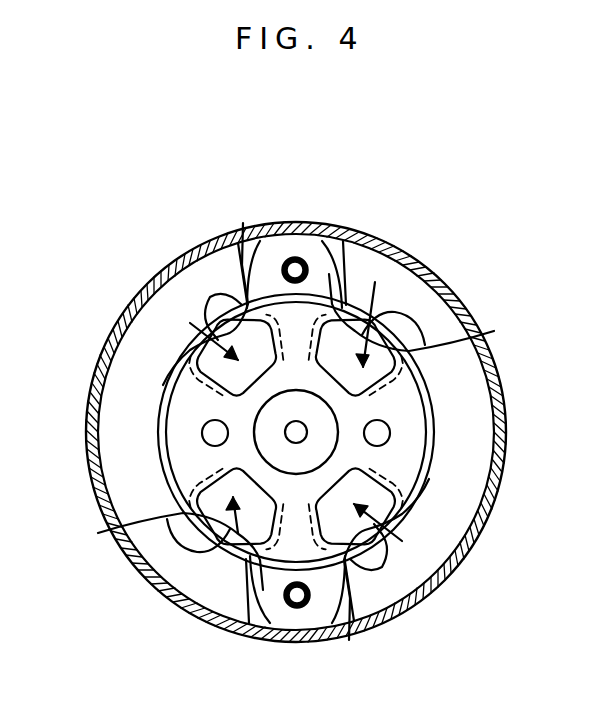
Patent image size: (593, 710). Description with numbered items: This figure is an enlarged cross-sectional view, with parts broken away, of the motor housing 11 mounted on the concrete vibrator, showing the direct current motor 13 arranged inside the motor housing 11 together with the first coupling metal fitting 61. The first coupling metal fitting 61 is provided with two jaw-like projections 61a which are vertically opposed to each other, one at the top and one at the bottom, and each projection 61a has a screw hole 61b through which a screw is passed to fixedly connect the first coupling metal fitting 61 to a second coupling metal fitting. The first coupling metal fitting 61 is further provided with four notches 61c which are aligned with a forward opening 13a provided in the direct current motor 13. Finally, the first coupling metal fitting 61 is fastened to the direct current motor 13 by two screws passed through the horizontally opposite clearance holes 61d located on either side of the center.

The motor housing 11 is at (500, 372).
The direct current motor 13 is at (358, 313).
The forward opening 13a is at (410, 627).
The first coupling metal fitting 61 is at (430, 472).
The jaw-like projection 61a is at (318, 258).
The screw hole 61b is at (295, 268).
The notch 61c is at (190, 323).
The clearance hole 61d is at (207, 433).